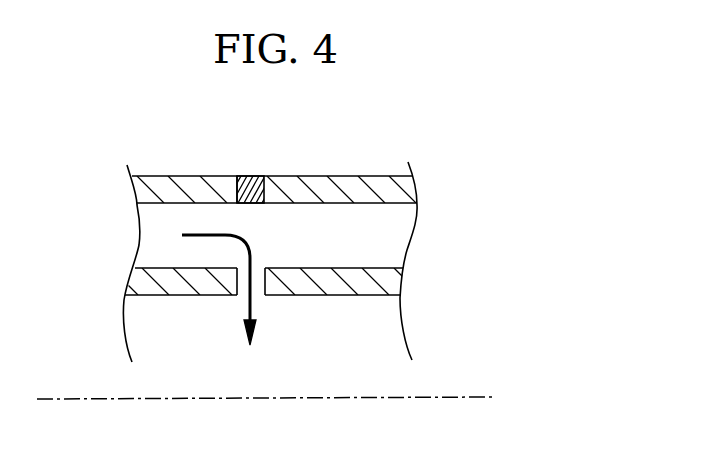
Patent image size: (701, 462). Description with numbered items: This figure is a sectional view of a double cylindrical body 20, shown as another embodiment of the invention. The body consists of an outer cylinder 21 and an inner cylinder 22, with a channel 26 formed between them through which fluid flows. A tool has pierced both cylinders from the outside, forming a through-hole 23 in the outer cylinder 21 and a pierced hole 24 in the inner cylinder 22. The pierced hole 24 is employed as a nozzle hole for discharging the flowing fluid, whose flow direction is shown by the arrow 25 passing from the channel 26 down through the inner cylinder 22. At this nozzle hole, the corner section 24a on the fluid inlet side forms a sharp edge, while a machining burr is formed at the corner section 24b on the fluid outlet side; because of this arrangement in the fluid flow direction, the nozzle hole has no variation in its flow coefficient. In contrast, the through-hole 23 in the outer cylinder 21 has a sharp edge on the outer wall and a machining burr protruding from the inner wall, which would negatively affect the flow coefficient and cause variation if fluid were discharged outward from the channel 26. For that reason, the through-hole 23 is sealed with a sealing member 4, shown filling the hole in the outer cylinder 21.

The double cylindrical body 20 is at (462, 122).
The outer cylinder 21 is at (348, 173).
The inner cylinder 22 is at (378, 265).
The through-hole 23 is at (253, 175).
The sealing member 4 is at (245, 175).
The pierced hole 24 is at (243, 287).
The corner section on fluid inlet side 24a is at (260, 267).
The corner section on fluid outlet side 24b is at (258, 297).
The arrow 25 is at (257, 333).
The channel 26 is at (158, 225).